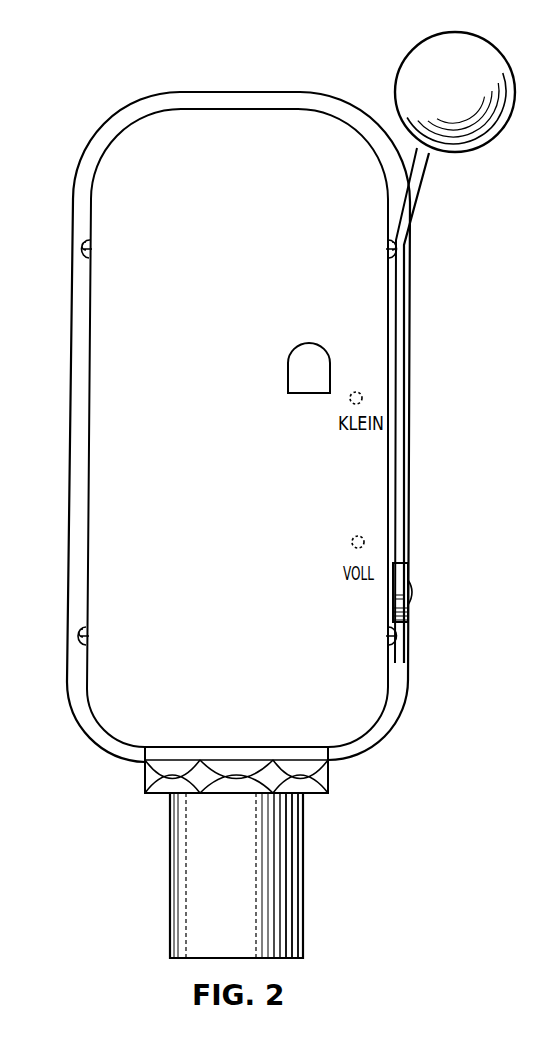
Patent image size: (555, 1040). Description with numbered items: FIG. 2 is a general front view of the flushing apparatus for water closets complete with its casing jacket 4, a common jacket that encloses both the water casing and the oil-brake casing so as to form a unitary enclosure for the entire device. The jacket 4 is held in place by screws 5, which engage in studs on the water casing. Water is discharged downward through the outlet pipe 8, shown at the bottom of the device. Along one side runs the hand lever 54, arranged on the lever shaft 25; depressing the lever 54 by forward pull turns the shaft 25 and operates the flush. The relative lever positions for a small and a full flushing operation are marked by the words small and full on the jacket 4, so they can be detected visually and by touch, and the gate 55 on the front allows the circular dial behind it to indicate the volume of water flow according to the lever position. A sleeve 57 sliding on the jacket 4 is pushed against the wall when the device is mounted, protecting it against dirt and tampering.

The casing jacket 4 is at (122, 214).
The screws 5 is at (84, 250).
The sleeve 57 is at (80, 325).
The hand lever 54 is at (417, 170).
The gate 55 is at (320, 380).
The lever shaft 25 is at (412, 600).
The outlet pipe 8 is at (288, 833).